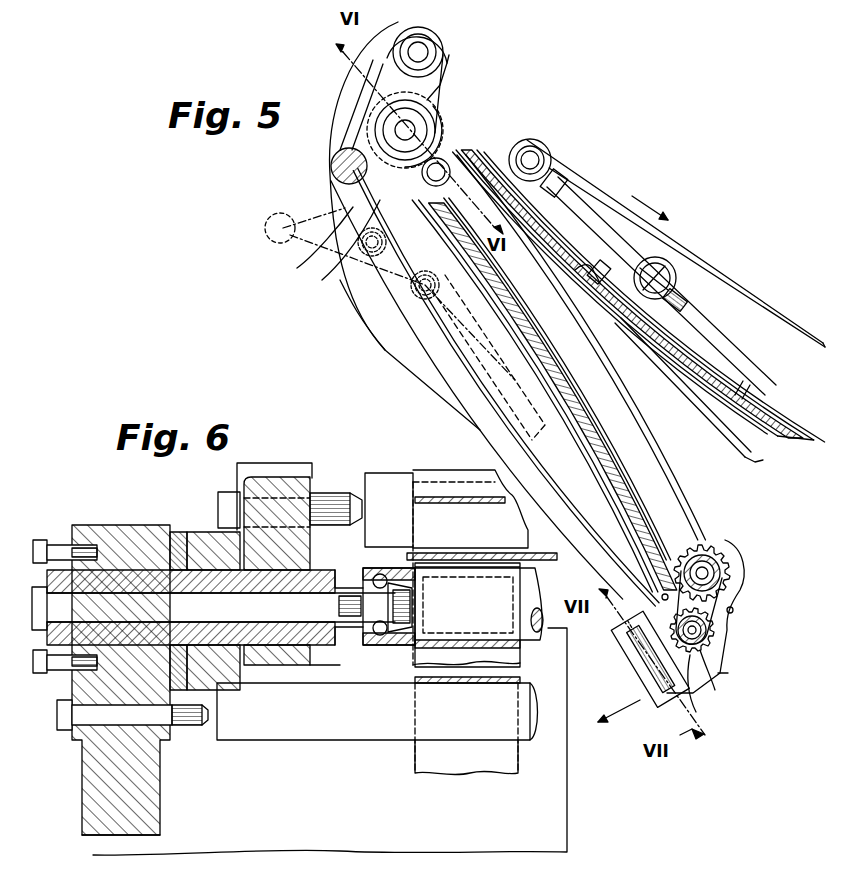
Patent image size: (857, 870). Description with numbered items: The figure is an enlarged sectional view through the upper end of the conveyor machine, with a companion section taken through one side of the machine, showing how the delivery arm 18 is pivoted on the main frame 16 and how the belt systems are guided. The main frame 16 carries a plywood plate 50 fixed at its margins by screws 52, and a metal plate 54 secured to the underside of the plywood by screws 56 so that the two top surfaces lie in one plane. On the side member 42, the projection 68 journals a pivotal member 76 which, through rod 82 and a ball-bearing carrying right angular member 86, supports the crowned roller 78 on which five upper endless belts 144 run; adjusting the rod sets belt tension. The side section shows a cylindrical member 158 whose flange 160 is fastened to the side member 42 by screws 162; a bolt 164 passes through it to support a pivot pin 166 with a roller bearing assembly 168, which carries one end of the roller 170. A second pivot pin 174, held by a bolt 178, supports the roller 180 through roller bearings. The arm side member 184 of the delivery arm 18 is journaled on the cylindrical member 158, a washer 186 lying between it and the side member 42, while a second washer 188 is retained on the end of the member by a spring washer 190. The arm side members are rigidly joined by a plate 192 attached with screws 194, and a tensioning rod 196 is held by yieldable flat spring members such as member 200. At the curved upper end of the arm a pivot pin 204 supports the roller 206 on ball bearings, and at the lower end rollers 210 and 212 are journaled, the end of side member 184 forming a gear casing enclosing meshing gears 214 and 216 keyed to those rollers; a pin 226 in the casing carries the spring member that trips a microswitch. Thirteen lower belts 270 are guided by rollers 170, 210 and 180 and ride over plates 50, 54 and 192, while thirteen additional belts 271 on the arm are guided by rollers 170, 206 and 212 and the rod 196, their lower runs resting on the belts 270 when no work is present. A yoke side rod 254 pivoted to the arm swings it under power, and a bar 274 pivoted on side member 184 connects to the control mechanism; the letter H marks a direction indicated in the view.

In FIG. 5, the frame 16 is at (493, 142).
In FIG. 5, the delivery arm 18 is at (440, 398).
In FIG. 5, the side member 42 is at (683, 478).
In FIG. 6, the side member 42 is at (90, 820).
In FIG. 5, the plate 50 is at (700, 350).
In FIG. 5, the screws 52 is at (748, 392).
In FIG. 5, the metal plate 54 is at (440, 157).
In FIG. 6, the metal plate 54 is at (555, 832).
In FIG. 5, the screws 56 is at (588, 290).
In FIG. 5, the projection 68 is at (672, 272).
In FIG. 5, the pivotal member 76 is at (676, 298).
In FIG. 5, the roller 78 is at (545, 170).
In FIG. 5, the rod 82 is at (595, 235).
In FIG. 5, the right angular member 86 is at (548, 180).
In FIG. 5, the endless belts 144 is at (755, 300).
In FIG. 6, the cylindrical member 158 is at (146, 575).
In FIG. 6, the flange 160 is at (50, 545).
In FIG. 6, the screws 162 is at (40, 672).
In FIG. 6, the bolt 164 is at (35, 600).
In FIG. 6, the pivot pin 166 is at (375, 580).
In FIG. 6, the roller bearing assembly 168 is at (372, 645).
In FIG. 5, the roller 170 is at (403, 130).
In FIG. 6, the roller 170 is at (525, 632).
In FIG. 6, the pivot pin 174 is at (204, 728).
In FIG. 6, the bolt 178 is at (62, 728).
In FIG. 5, the roller 180 is at (468, 178).
In FIG. 6, the roller 180 is at (405, 730).
In FIG. 5, the side member 184 is at (422, 353).
In FIG. 6, the side member 184 is at (270, 500).
In FIG. 6, the washer 186 is at (180, 545).
In FIG. 6, the second washer 188 is at (358, 590).
In FIG. 6, the spring washer 190 is at (340, 660).
In FIG. 5, the plate 192 is at (640, 488).
In FIG. 5, the screws 194 is at (655, 540).
In FIG. 5, the rod 196 is at (332, 166).
In FIG. 5, the yieldable flat spring member 200 is at (347, 277).
In FIG. 6, the pivot pin 204 is at (332, 495).
In FIG. 5, the roller 206 is at (440, 40).
In FIG. 6, the roller 206 is at (385, 473).
In FIG. 5, the roller 210 is at (715, 598).
In FIG. 5, the roller 212 is at (695, 712).
In FIG. 5, the gear 214 is at (730, 565).
In FIG. 5, the gear 216 is at (712, 680).
In FIG. 5, the pin 226 is at (626, 645).
In FIG. 5, the side rod 254 is at (672, 470).
In FIG. 5, the endless belts 270 is at (763, 462).
In FIG. 6, the endless belts 270 is at (470, 773).
In FIG. 5, the additional belts 271 is at (300, 268).
In FIG. 6, the additional belts 271 is at (433, 482).
In FIG. 5, the bar 274 is at (373, 307).
In FIG. 5, the horizontal direction H is at (733, 700).